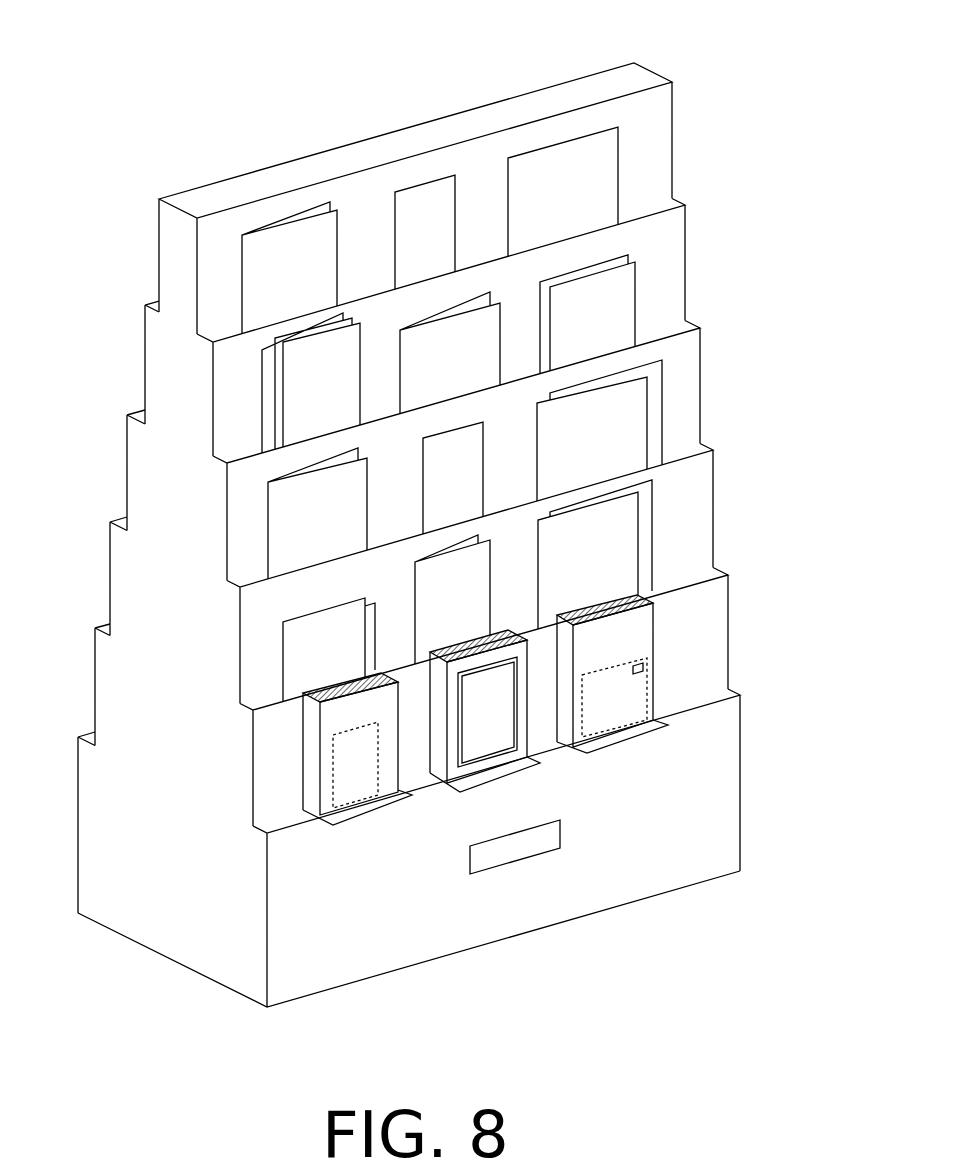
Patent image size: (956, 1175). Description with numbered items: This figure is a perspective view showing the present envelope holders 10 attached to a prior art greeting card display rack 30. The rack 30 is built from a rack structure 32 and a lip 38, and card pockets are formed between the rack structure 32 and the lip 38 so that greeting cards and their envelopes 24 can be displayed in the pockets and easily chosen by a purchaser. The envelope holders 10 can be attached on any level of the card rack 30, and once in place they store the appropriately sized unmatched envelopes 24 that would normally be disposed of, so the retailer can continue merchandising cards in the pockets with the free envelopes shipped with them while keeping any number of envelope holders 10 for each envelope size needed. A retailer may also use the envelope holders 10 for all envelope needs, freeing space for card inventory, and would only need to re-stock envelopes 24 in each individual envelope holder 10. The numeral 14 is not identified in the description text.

The greeting card display rack 30 is at (203, 157).
The greeting card 14 is at (600, 322).
The rack structure 32 is at (222, 500).
The lip 38 is at (707, 597).
The envelope 24 is at (318, 685).
The envelope holder 10 is at (696, 642).